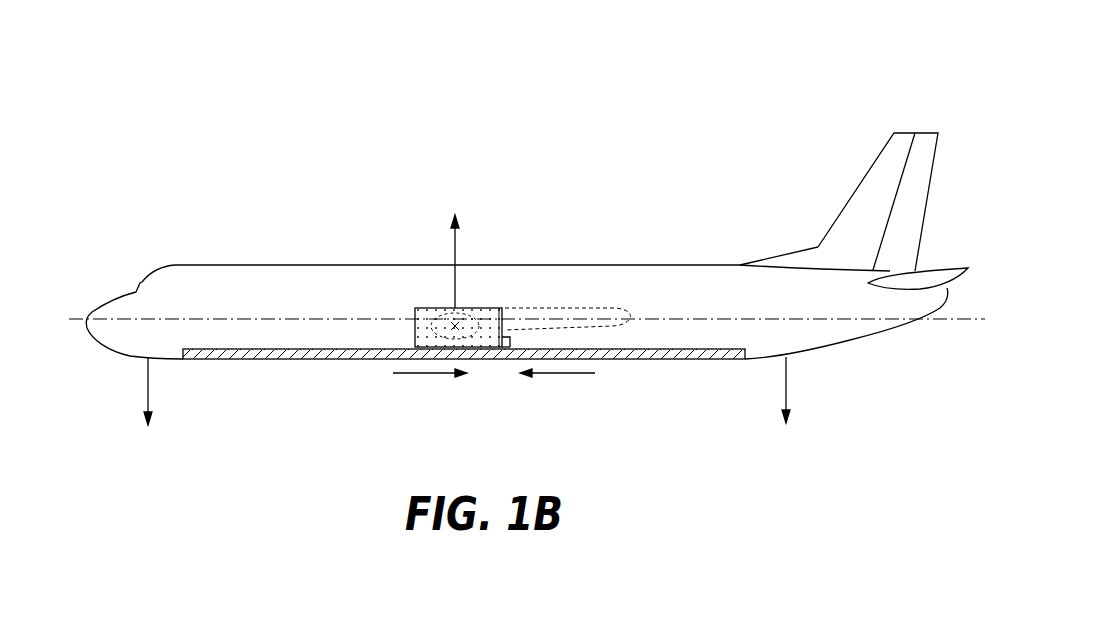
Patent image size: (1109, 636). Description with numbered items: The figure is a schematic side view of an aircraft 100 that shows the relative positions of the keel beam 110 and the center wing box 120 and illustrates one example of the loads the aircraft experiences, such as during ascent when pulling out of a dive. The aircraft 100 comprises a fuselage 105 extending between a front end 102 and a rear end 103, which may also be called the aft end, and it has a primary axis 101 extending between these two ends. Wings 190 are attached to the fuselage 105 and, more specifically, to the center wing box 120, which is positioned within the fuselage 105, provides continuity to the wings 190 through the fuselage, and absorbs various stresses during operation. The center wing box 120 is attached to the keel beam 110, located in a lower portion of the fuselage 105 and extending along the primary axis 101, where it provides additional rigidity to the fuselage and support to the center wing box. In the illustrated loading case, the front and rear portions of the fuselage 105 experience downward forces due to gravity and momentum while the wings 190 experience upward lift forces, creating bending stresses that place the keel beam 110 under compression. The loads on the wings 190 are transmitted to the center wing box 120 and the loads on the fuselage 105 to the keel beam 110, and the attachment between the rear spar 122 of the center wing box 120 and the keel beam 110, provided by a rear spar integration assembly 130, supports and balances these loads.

The aircraft 100 is at (842, 73).
The primary axis 101 is at (772, 320).
The front end 102 is at (87, 316).
The rear end 103 is at (943, 320).
The fuselage 105 is at (233, 265).
The keel beam 110 is at (623, 361).
The center wing box 120 is at (490, 307).
The rear spar 122 is at (513, 322).
The rear spar integration assembly 130 is at (506, 349).
The wings 190 is at (620, 308).